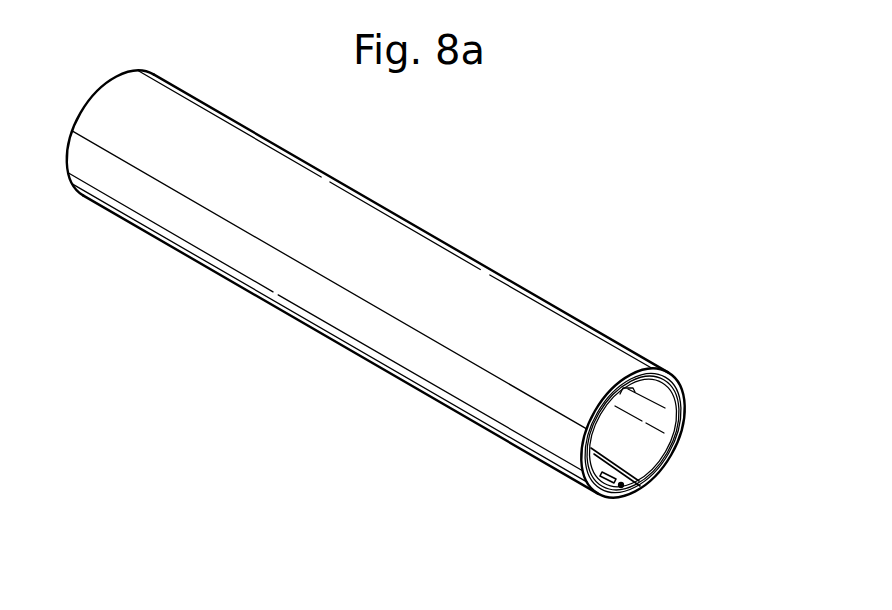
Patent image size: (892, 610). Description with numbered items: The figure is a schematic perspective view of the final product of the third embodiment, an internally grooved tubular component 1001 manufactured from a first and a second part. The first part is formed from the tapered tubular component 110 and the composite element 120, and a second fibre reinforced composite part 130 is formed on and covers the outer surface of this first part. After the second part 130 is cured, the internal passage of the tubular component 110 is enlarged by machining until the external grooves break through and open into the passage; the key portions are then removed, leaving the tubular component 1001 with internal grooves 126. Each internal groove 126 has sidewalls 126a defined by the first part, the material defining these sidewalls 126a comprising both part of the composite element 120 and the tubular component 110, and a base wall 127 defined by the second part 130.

The tubular component 1001 is at (478, 232).
The tubular component 110 is at (683, 425).
The composite element 120 is at (683, 398).
The second fibre reinforced composite part 130 is at (670, 372).
The internal grooves 126 is at (635, 383).
The sidewalls 126a is at (612, 493).
The base wall 127 is at (635, 490).